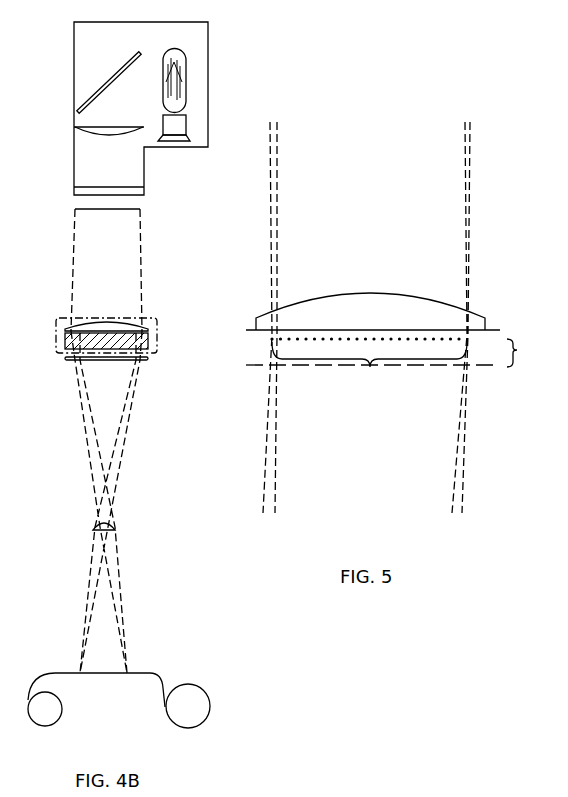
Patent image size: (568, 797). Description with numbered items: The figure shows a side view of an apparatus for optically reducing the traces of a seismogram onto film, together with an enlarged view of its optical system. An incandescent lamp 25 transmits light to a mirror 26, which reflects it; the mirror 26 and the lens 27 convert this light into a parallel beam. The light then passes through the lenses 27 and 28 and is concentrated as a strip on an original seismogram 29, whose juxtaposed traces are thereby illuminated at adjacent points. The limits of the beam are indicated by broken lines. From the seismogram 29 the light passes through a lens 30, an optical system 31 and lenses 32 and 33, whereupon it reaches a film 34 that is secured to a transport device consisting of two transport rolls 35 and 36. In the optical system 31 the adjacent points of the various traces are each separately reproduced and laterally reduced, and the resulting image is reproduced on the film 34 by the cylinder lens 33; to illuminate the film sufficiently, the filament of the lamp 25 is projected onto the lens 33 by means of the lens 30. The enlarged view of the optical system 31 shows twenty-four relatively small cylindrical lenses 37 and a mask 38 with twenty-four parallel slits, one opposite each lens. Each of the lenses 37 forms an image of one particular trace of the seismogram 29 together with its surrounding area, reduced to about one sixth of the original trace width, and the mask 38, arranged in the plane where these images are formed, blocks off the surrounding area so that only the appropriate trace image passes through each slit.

In FIG. 4B, the incandescent lamp 25 is at (183, 83).
In FIG. 4B, the mirror 26 is at (113, 83).
In FIG. 4B, the lens 27 is at (113, 135).
In FIG. 4B, the lens 28 is at (139, 192).
In FIG. 4B, the original seismogram 29 is at (128, 210).
In FIG. 4B, the lens 30 is at (133, 330).
In FIG. 5, the lens 30 is at (378, 323).
In FIG. 4B, the optical system 31 is at (150, 341).
In FIG. 5, the optical system 31 is at (517, 350).
In FIG. 4B, the lens 32 is at (148, 360).
In FIG. 4B, the cylinder lens 33 is at (116, 526).
In FIG. 4B, the film 34 is at (143, 673).
In FIG. 4B, the transport roll 35 is at (182, 718).
In FIG. 4B, the transport roll 36 is at (47, 719).
In FIG. 5, the cylindrical lenses 37 is at (369, 369).
In FIG. 5, the mask 38 is at (440, 367).